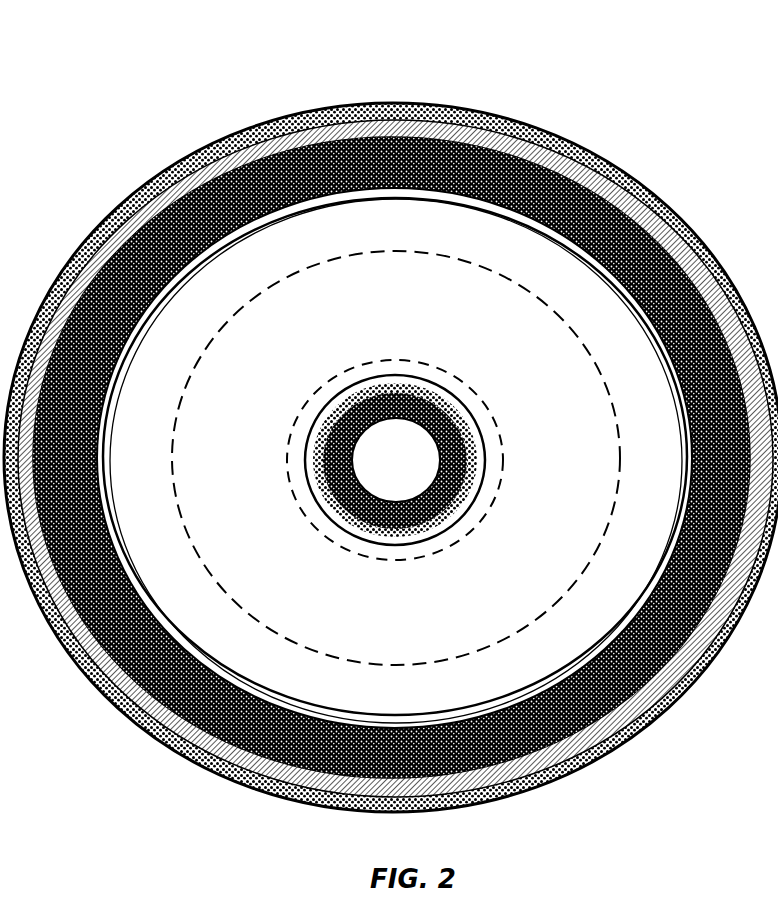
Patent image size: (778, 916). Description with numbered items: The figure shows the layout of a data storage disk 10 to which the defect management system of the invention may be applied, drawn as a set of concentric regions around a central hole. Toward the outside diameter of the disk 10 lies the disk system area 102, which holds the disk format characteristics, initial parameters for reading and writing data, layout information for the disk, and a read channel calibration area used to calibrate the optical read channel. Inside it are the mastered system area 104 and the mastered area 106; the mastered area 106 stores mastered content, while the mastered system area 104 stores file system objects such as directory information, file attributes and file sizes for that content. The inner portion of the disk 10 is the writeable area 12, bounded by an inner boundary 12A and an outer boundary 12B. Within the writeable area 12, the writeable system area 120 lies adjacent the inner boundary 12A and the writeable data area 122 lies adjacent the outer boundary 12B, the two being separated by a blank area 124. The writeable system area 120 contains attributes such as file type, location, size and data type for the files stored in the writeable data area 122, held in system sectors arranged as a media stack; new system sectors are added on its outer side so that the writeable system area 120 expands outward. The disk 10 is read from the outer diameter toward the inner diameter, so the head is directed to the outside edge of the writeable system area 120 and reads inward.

The data storage disk 10 is at (114, 63).
The writeable area 12 is at (395, 460).
The inner boundary 12A is at (323, 417).
The outer boundary 12B is at (119, 540).
The disk system area 102 is at (650, 198).
The mastered system area 104 is at (583, 158).
The mastered area 106 is at (498, 140).
The writeable system area 120 is at (476, 408).
The writeable data area 122 is at (661, 473).
The blank area 124 is at (410, 270).